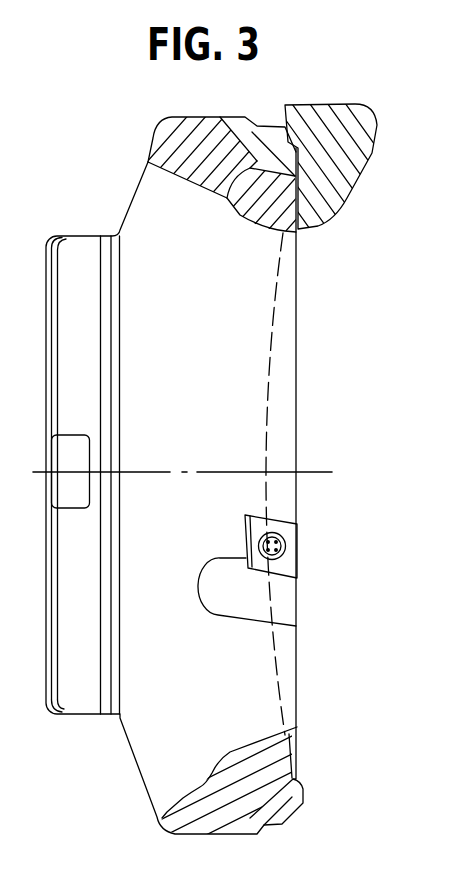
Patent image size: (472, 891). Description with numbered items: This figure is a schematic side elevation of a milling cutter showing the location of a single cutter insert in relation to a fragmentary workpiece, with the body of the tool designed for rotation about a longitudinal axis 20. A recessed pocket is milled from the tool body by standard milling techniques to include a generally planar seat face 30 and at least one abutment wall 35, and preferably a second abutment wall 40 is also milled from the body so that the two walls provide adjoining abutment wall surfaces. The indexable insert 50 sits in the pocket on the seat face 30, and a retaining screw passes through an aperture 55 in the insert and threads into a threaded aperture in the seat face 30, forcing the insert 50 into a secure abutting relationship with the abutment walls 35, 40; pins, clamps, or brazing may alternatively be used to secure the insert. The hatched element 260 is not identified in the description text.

The longitudinal axis 20 is at (314, 470).
The seat face 30 is at (228, 200).
The abutment wall 35 is at (265, 116).
The second abutment wall 40 is at (283, 519).
The indexable insert 50 is at (299, 571).
The aperture 55 is at (286, 541).
The ring 260 is at (348, 105).